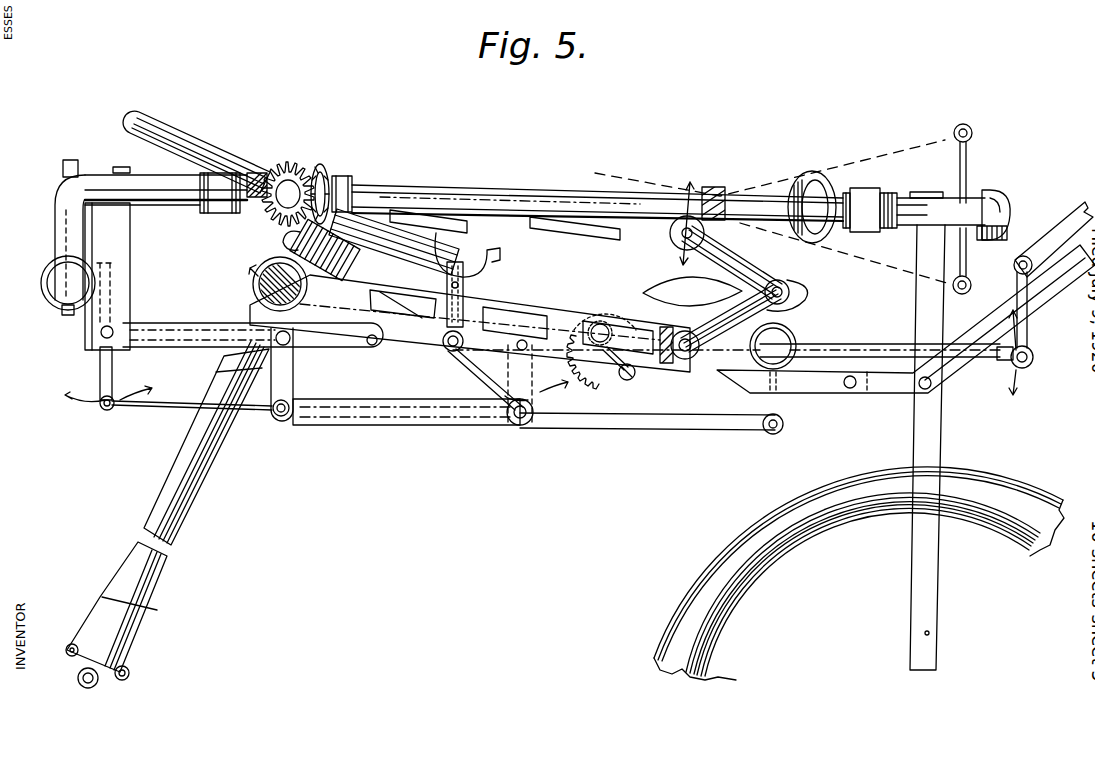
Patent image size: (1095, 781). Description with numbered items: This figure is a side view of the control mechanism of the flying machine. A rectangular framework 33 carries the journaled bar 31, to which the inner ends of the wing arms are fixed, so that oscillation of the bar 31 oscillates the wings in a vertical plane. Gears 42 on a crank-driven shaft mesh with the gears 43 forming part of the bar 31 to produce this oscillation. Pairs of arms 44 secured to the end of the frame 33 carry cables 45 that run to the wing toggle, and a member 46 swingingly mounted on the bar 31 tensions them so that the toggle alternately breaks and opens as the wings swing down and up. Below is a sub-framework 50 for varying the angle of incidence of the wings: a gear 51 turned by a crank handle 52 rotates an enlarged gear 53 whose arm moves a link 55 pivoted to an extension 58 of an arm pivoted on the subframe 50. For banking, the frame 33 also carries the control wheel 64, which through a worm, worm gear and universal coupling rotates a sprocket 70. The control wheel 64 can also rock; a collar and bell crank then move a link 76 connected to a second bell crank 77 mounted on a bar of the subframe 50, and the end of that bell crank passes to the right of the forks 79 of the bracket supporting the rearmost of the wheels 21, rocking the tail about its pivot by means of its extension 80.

The wheels 21 is at (990, 492).
The bar 31 is at (427, 195).
The framework 33 is at (138, 190).
The gears 42 is at (294, 168).
The gears 43 is at (328, 176).
The arms 44 is at (967, 172).
The cables 45 is at (902, 152).
The member 46 is at (802, 180).
The sub-framework 50 is at (1037, 306).
The gear 51 is at (583, 363).
The crank handle 52 is at (630, 376).
The enlarged gear 53 is at (542, 420).
The link 55 is at (420, 428).
The extension 58 is at (280, 395).
The control wheel 64 is at (208, 150).
The sprocket 70 is at (72, 162).
The link 76 is at (665, 430).
The second bell crank 77 is at (842, 352).
The forks 79 is at (932, 430).
The extension 80 is at (1045, 298).